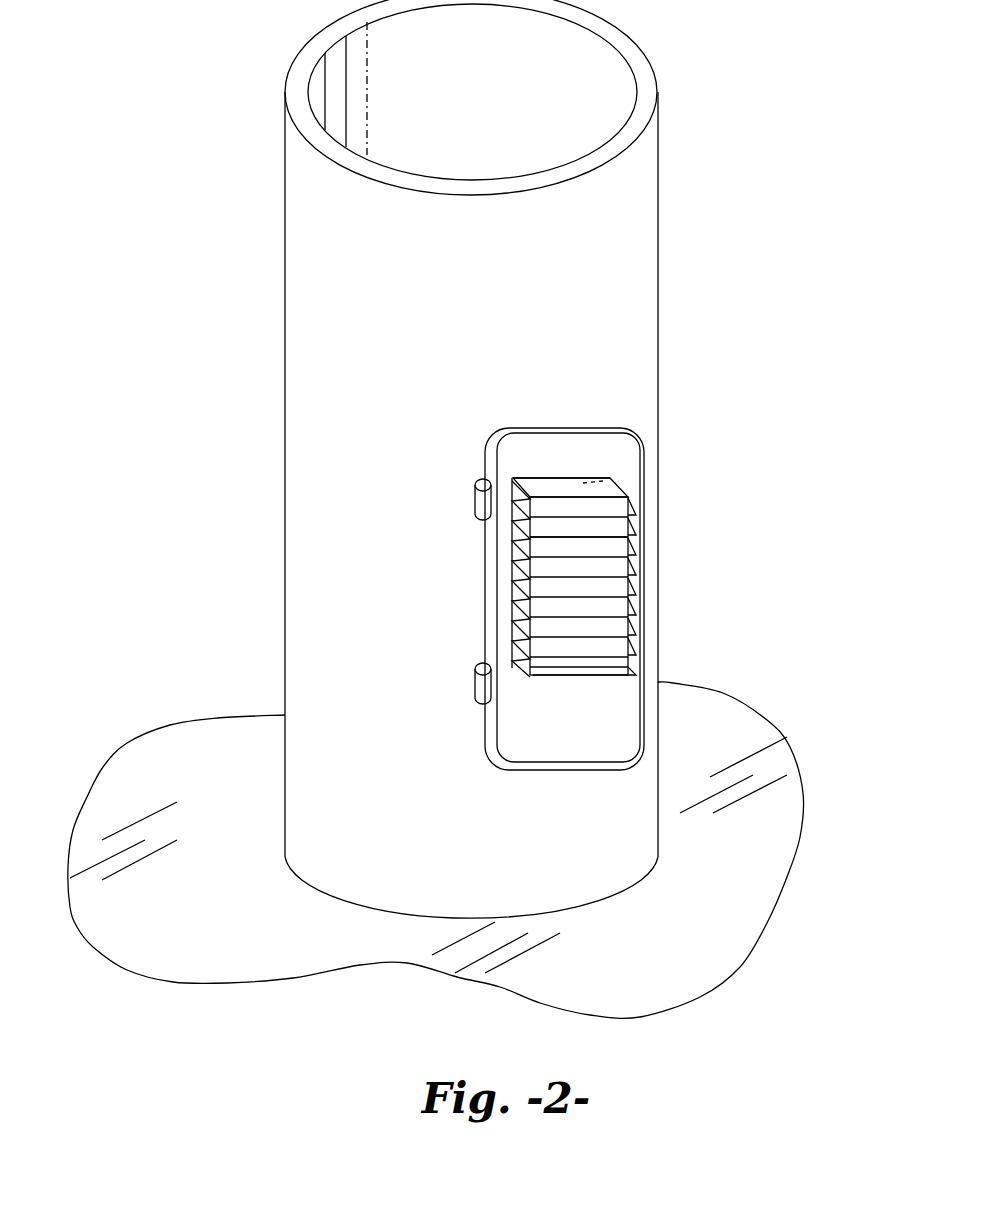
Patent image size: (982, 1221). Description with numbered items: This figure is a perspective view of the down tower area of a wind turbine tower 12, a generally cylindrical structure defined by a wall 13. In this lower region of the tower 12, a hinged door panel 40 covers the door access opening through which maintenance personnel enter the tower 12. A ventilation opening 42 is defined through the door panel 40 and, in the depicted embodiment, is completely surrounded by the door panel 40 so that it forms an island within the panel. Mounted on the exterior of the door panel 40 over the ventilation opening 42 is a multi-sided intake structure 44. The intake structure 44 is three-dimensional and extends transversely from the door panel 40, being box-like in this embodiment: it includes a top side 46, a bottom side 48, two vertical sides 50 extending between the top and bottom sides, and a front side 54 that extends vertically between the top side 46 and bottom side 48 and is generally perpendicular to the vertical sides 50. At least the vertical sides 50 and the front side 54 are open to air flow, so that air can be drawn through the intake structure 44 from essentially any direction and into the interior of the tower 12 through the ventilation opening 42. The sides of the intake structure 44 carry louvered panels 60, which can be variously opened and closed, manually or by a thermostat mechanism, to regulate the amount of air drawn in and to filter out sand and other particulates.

The tower 12 is at (658, 282).
The wall 13 is at (513, 302).
The hinged door panel 40 is at (560, 734).
The ventilation opening 42 is at (587, 480).
The multi-sided intake structure 44 is at (522, 449).
The top side 46 is at (605, 487).
The bottom side 48 is at (558, 668).
The vertical sides 50 is at (502, 595).
The front side 54 is at (613, 553).
The louvered panels 60 is at (630, 620).